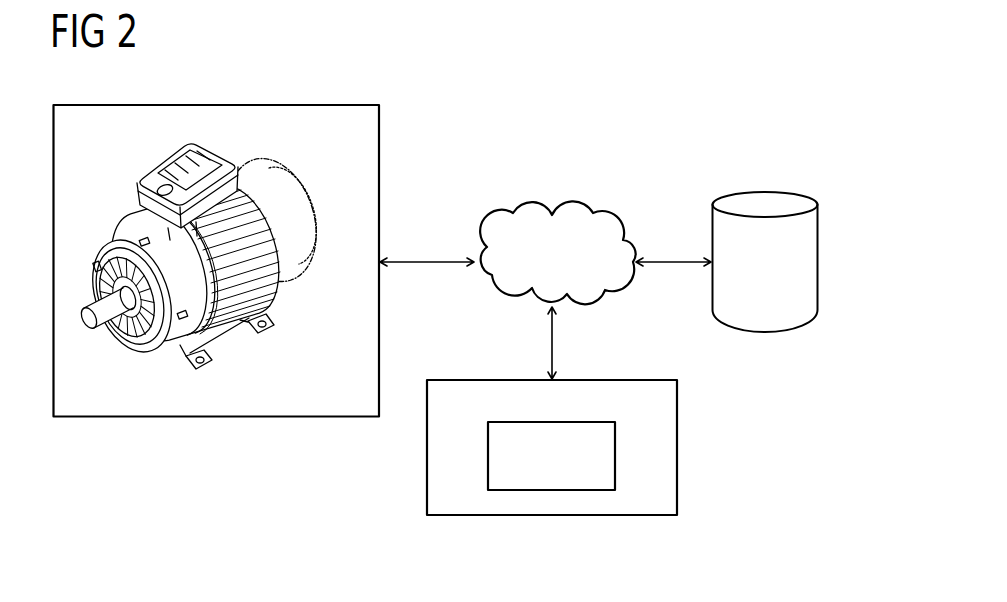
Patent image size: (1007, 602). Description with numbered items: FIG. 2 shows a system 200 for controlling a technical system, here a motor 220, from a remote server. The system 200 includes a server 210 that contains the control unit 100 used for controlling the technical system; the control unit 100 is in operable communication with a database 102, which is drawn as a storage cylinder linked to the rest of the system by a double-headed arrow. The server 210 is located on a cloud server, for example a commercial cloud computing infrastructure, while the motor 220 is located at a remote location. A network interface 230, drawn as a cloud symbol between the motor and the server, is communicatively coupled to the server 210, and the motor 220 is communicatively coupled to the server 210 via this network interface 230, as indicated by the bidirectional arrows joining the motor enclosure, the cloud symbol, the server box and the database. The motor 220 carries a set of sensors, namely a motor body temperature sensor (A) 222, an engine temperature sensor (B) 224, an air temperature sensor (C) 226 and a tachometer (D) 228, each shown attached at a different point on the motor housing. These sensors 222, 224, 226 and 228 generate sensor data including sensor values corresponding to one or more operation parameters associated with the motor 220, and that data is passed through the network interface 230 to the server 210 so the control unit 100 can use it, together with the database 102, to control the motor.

The system 200 is at (760, 110).
The motor 220 is at (201, 104).
The motor body temperature sensor (A) 222 is at (177, 297).
The engine temperature sensor (B) 224 is at (287, 283).
The air temperature sensor (C) 226 is at (268, 177).
The tachometer (D) 228 is at (147, 200).
The network interface 230 is at (578, 269).
The server 210 is at (575, 419).
The control unit 100 is at (575, 473).
The database 102 is at (785, 276).